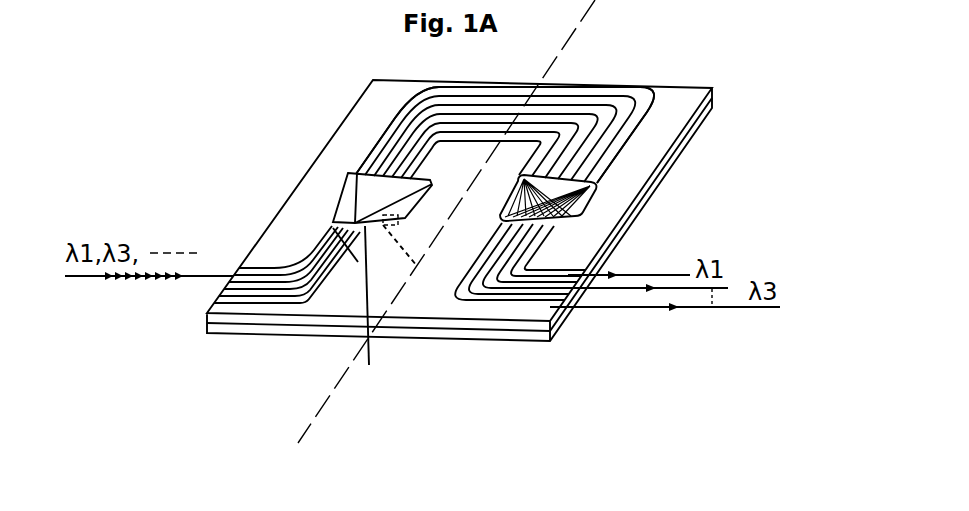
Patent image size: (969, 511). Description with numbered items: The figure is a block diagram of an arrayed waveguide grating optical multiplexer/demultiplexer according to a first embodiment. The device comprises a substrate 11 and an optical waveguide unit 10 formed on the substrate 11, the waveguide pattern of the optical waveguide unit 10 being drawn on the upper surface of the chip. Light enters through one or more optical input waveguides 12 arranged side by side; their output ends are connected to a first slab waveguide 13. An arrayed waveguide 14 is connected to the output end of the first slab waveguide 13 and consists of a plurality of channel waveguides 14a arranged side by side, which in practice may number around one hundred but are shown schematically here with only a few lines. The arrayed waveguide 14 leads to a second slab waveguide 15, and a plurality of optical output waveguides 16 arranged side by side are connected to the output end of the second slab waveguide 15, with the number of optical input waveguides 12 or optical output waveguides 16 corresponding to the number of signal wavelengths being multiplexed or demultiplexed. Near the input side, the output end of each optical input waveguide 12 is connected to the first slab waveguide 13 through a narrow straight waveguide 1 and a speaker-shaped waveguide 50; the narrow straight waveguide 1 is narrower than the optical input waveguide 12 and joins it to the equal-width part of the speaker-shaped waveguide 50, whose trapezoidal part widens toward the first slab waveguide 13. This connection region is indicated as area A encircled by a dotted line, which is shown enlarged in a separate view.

The narrow straight waveguide 1 is at (330, 228).
The optical waveguide unit 10 is at (712, 96).
The substrate 11 is at (705, 112).
The optical input waveguides 12 is at (268, 268).
The first slab waveguide 13 is at (347, 172).
The arrayed waveguide 14 is at (463, 90).
The channel waveguides 14a is at (373, 152).
The second slab waveguide 15 is at (590, 212).
The optical output waveguides 16 is at (575, 256).
The speaker-shaped waveguide 50 is at (333, 218).
The area A is at (410, 252).